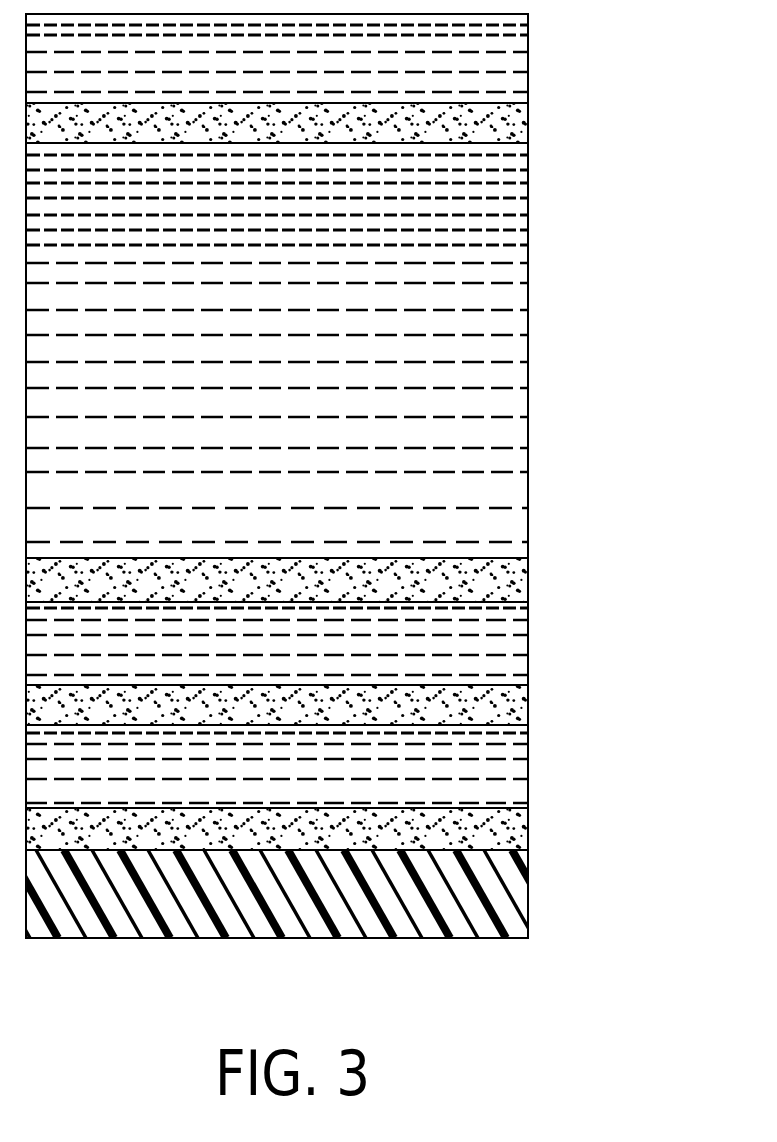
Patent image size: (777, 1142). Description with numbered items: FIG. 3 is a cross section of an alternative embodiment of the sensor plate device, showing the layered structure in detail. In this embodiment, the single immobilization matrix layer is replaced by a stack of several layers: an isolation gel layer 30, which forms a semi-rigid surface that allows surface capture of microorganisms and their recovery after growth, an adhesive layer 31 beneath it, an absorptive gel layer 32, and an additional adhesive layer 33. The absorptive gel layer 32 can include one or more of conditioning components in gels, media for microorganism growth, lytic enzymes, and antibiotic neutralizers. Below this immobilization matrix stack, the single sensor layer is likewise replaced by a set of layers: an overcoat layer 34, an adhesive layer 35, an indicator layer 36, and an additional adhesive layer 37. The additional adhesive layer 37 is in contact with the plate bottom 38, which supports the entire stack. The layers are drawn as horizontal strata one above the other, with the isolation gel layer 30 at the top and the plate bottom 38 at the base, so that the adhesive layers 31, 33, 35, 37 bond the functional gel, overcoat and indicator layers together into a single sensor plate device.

The isolation gel layer 30 is at (529, 52).
The adhesive layer 31 is at (529, 118).
The absorptive gel layer 32 is at (529, 212).
The additional adhesive layer 33 is at (529, 570).
The overcoat layer 34 is at (529, 638).
The adhesive layer 35 is at (529, 702).
The indicator layer 36 is at (529, 765).
The additional adhesive layer 37 is at (529, 828).
The plate bottom 38 is at (529, 892).